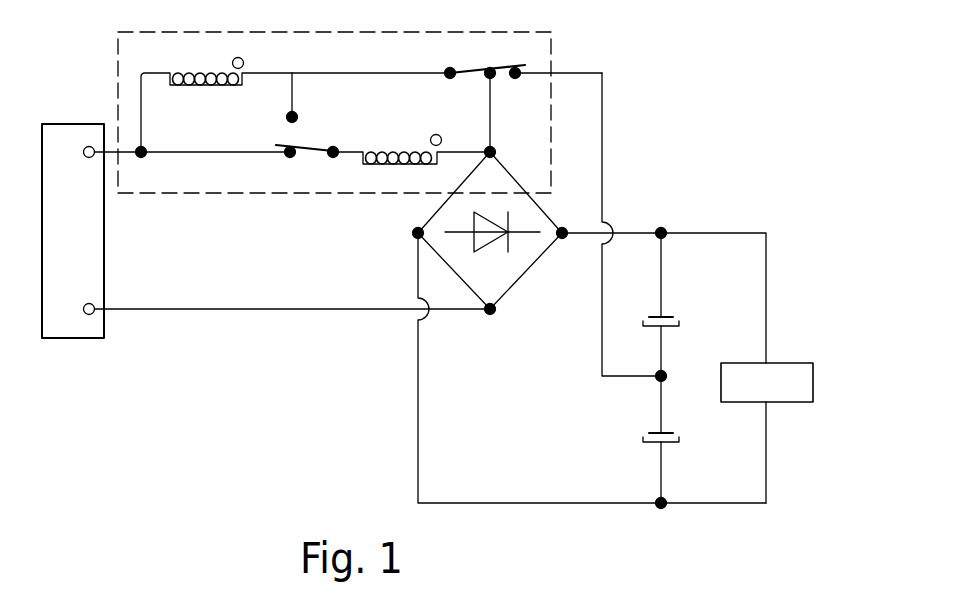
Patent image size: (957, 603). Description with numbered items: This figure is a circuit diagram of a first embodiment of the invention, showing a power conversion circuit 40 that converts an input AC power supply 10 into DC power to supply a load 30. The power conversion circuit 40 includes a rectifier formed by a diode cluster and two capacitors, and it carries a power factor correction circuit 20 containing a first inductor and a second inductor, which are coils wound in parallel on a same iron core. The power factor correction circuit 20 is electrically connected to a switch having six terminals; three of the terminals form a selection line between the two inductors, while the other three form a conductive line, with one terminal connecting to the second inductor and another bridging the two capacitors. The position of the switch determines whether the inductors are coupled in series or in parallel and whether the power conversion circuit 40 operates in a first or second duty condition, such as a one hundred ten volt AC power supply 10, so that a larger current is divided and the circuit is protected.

The AC power supply 10 is at (65, 327).
The power factor correction circuit 20 is at (552, 43).
The load 30 is at (790, 363).
The power conversion circuit 40 is at (753, 82).